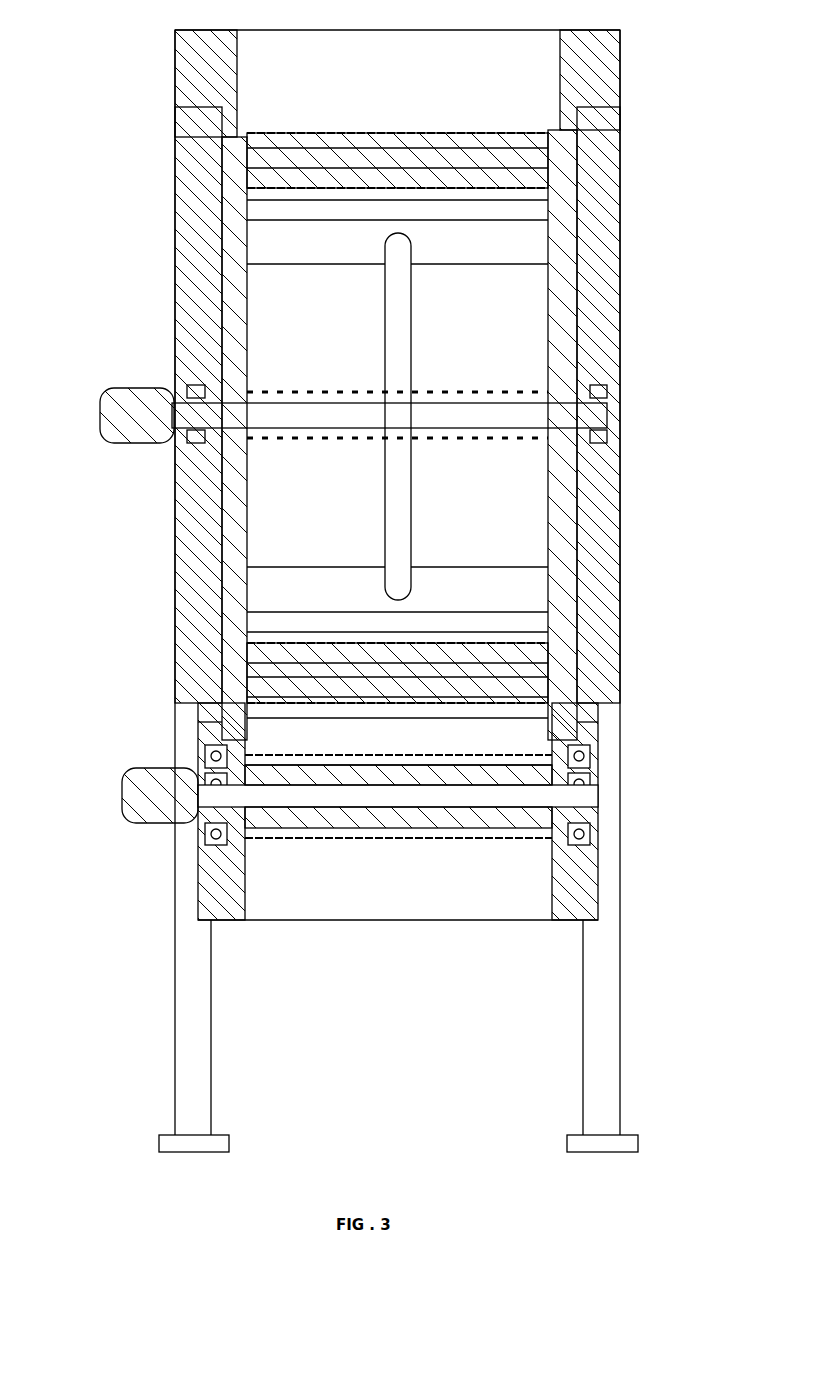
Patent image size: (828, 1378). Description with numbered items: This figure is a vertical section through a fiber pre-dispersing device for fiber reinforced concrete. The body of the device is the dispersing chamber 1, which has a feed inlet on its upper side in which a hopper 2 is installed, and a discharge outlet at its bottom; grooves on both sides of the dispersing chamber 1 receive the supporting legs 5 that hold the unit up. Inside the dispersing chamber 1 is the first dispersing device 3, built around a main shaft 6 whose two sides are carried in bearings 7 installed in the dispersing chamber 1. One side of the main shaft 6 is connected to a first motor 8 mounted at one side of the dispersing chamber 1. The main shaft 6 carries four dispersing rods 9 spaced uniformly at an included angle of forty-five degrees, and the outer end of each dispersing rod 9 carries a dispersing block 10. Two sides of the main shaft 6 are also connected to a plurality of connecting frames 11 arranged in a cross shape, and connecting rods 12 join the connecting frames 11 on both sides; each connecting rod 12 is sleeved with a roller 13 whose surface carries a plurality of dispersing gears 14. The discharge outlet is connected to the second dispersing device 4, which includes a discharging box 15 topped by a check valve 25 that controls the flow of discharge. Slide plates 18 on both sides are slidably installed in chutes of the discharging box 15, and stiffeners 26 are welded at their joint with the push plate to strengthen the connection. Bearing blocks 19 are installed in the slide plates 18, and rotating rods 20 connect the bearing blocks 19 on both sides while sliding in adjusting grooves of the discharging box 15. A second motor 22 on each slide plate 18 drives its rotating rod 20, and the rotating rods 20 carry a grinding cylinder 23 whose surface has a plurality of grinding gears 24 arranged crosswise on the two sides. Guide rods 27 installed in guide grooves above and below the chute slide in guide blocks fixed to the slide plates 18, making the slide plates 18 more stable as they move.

The dispersing chamber 1 is at (190, 205).
The hopper 2 is at (245, 68).
The first dispersing device 3 is at (510, 248).
The second dispersing device 4 is at (590, 728).
The supporting legs 5 is at (612, 1065).
The main shaft 6 is at (187, 411).
The bearings 7 is at (600, 440).
The first motor 8 is at (104, 418).
The dispersing rods 9 is at (385, 515).
The dispersing block 10 is at (300, 590).
The connecting frames 11 is at (235, 288).
The connecting rods 12 is at (525, 162).
The roller 13 is at (262, 150).
The dispersing gears 14 is at (340, 152).
The discharging box 15 is at (215, 716).
The slide plates 18 is at (580, 816).
The bearing blocks 19 is at (580, 774).
The rotating rods 20 is at (355, 838).
The second motor 22 is at (126, 800).
The grinding cylinder 23 is at (415, 828).
The grinding gears 24 is at (475, 838).
The check valve 25 is at (520, 706).
The stiffeners 26 is at (226, 845).
The guide rods 27 is at (582, 836).